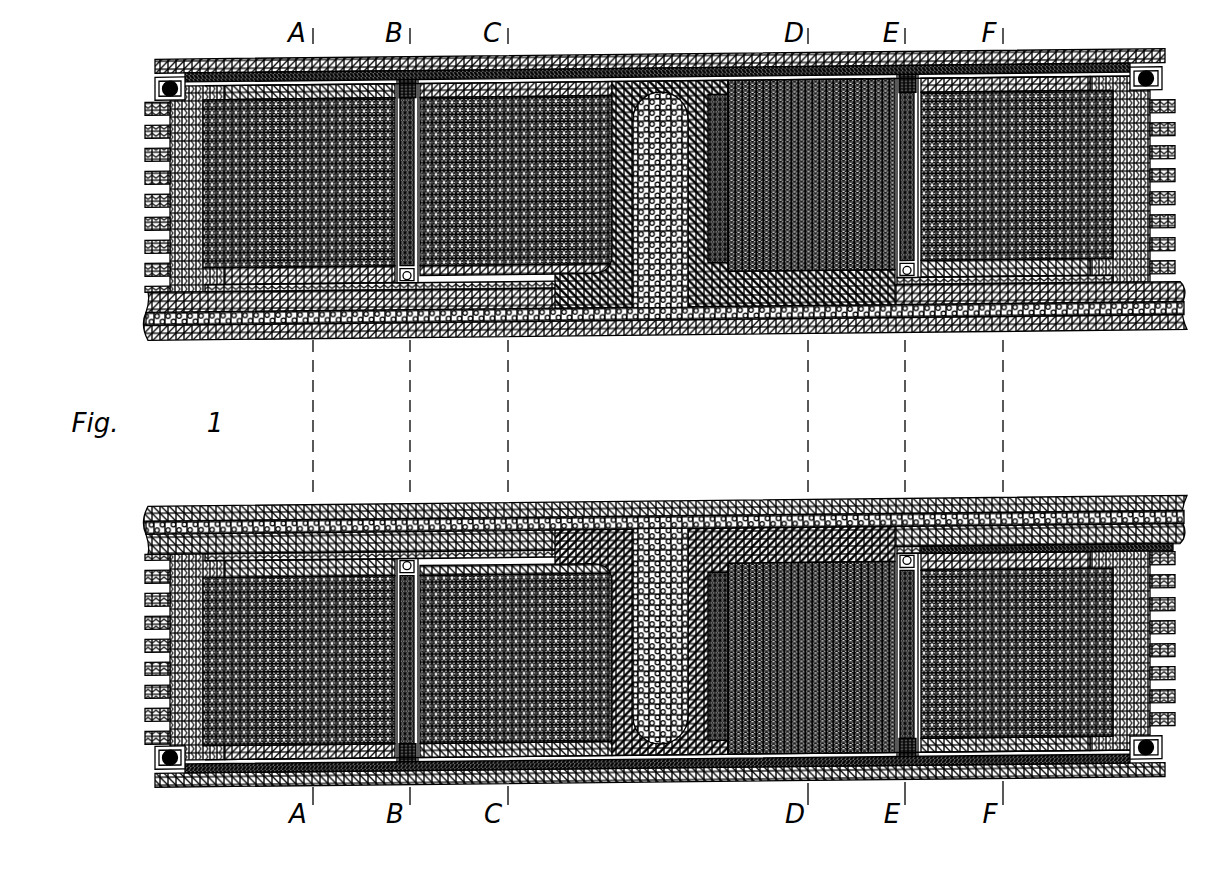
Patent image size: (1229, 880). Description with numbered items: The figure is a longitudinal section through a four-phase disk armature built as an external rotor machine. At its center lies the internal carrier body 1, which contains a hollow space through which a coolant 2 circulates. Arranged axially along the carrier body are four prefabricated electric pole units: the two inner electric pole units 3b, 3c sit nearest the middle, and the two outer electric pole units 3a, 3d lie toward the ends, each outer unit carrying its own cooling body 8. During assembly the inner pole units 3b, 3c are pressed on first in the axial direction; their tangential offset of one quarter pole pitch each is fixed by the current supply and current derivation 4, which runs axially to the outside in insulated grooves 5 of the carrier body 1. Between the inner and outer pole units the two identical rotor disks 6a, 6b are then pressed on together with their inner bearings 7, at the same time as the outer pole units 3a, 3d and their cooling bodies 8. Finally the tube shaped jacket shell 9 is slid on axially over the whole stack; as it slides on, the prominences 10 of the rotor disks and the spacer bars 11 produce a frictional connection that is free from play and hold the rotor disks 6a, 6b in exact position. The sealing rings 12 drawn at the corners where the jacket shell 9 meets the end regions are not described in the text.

The internal carrier body 1 is at (603, 292).
The coolant 2 is at (652, 267).
The outer electric pole unit 3a is at (322, 258).
The inner electric pole unit 3b is at (516, 258).
The inner electric pole unit 3c is at (793, 247).
The outer electric pole unit 3d is at (988, 258).
The current supply and current derivation 4 is at (928, 549).
The insulated grooves 5 is at (1163, 505).
The rotor disk 6a is at (410, 283).
The rotor disk 6b is at (905, 275).
The inner bearings 7 is at (406, 283).
The cooling bodies 8 is at (190, 270).
The jacket shell 9 is at (675, 62).
The prominences 10 is at (914, 72).
The spacer bars 11 is at (262, 77).
The O-ring 12 is at (162, 83).